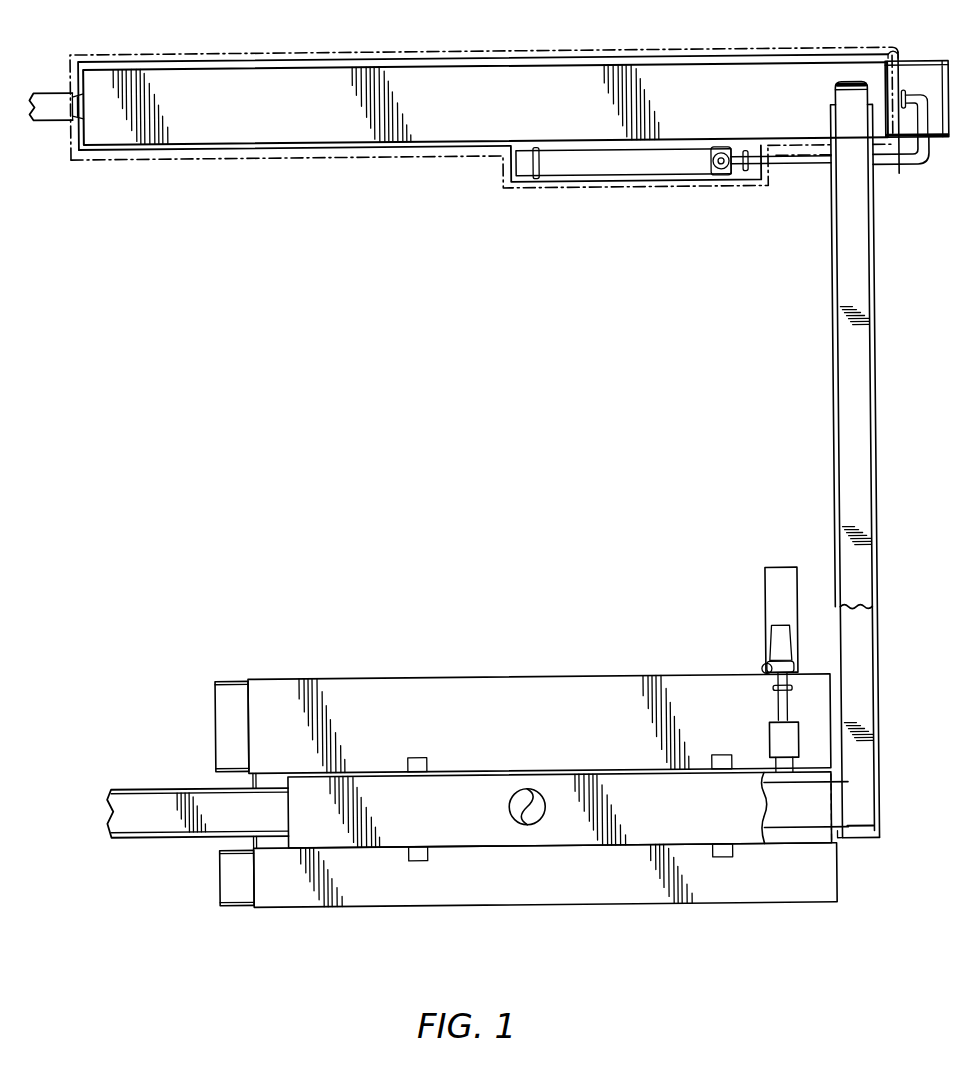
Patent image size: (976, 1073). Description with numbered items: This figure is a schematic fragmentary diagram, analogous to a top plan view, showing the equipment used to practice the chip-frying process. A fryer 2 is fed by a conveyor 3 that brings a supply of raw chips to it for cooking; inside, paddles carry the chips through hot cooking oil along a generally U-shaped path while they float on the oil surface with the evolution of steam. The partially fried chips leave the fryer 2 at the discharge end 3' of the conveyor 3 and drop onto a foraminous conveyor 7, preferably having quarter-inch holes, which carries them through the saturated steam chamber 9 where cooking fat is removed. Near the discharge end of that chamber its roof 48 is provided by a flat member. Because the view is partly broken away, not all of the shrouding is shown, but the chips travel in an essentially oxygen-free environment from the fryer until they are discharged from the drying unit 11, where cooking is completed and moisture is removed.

The drying unit 11 is at (492, 47).
The roof 48 is at (858, 238).
The saturated steam chamber 9 is at (846, 457).
The foraminous conveyor 7 is at (853, 808).
The fryer 2 is at (358, 656).
The conveyor 3 is at (198, 784).
The discharge end 3' is at (827, 823).